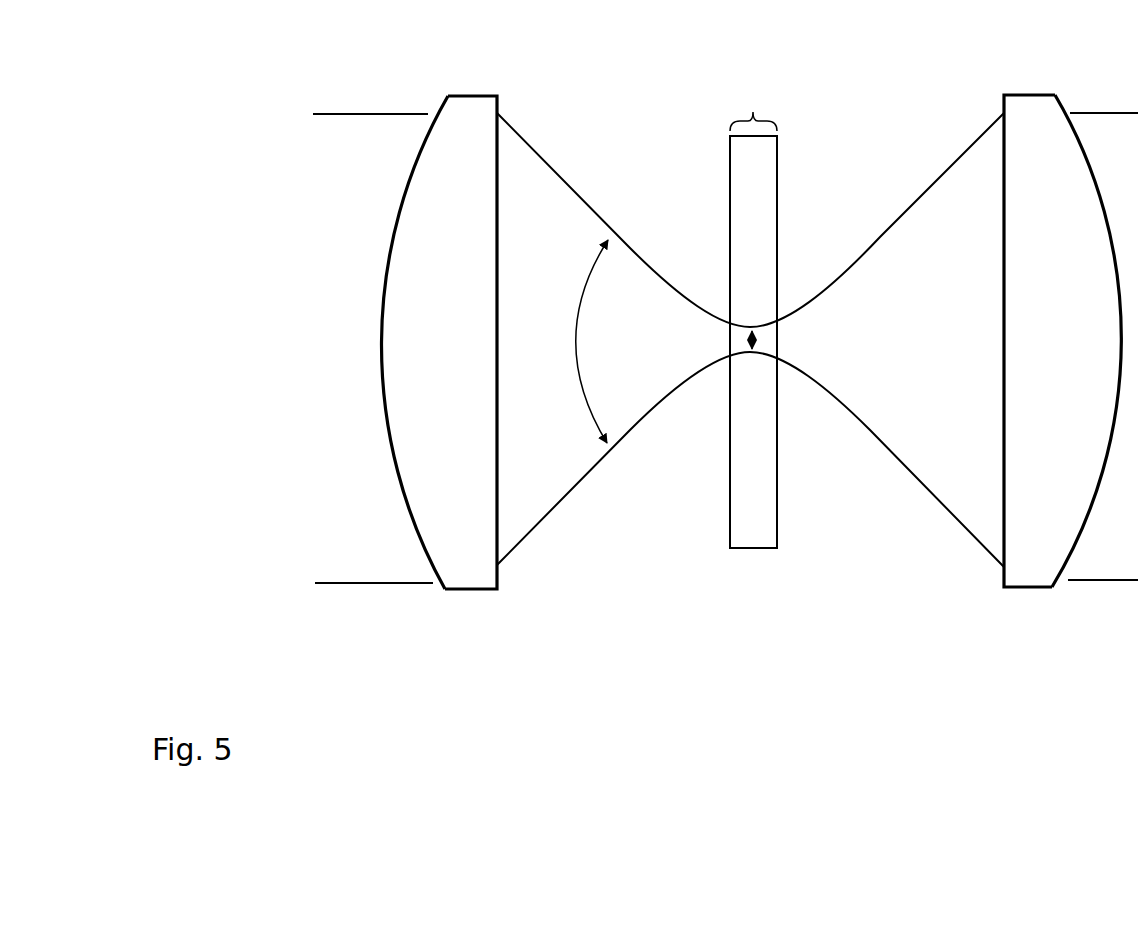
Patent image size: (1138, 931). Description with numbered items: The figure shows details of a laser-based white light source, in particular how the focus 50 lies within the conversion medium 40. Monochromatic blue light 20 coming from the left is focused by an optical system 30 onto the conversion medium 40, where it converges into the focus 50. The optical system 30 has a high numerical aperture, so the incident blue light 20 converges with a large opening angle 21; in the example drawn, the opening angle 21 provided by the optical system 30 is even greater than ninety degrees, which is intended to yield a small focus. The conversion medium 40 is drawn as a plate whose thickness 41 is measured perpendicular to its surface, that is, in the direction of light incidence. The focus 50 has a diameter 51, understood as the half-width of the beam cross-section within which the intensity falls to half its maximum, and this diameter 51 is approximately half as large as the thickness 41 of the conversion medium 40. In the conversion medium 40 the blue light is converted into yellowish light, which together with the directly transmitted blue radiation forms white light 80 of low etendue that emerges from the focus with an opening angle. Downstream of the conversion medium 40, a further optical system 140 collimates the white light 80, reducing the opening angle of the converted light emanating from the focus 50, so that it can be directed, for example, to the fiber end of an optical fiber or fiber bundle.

The monochromatic blue light 20 is at (597, 218).
The opening angle 21 is at (574, 375).
The optical system 30 is at (473, 567).
The conversion medium 40 is at (750, 532).
The thickness 41 is at (753, 97).
The focus 50 is at (772, 347).
The diameter 51 is at (748, 337).
The white light 80 is at (919, 200).
The optical system 140 is at (1025, 588).